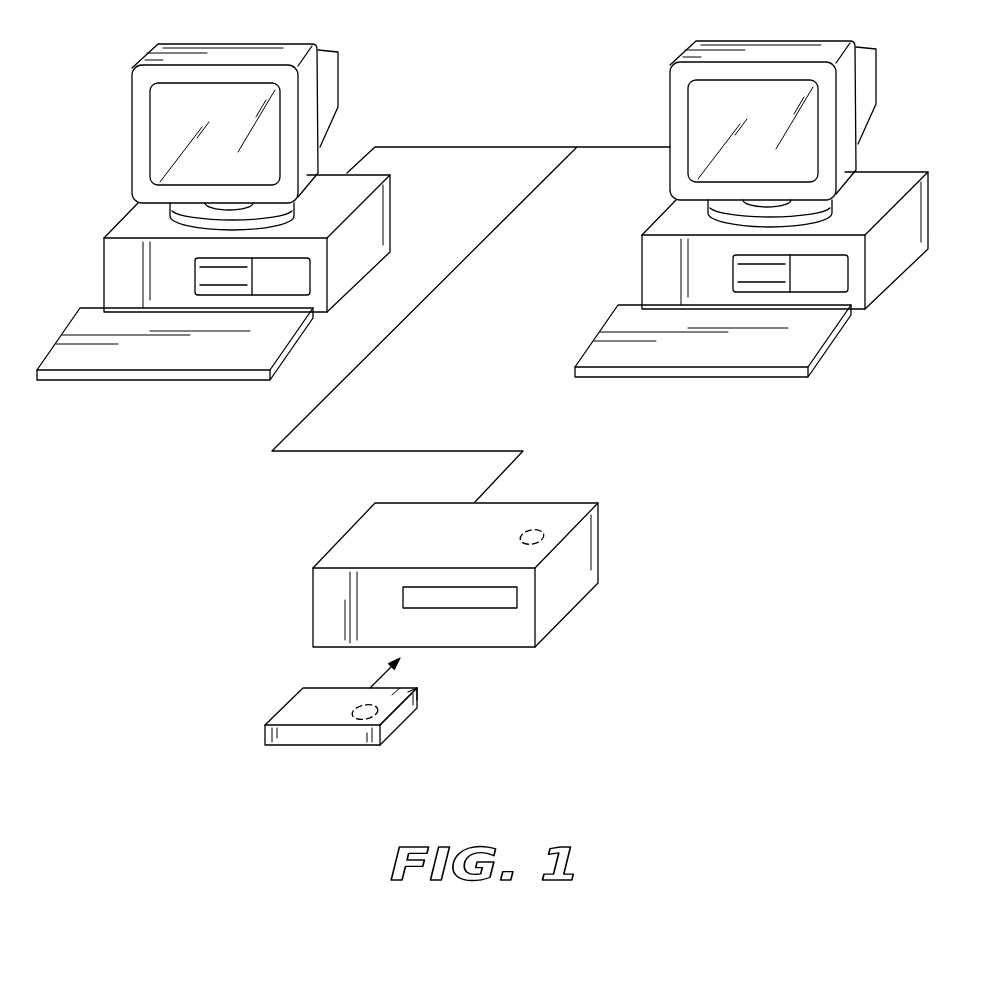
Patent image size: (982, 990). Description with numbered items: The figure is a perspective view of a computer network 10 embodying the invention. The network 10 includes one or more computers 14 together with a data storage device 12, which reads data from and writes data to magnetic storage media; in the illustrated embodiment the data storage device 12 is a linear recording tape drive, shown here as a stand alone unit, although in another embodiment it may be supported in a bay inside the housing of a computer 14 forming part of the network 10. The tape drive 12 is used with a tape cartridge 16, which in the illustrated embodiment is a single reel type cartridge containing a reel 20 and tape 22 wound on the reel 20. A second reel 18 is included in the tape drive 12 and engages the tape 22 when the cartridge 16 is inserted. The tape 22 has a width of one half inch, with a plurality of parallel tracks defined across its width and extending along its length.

The computer network 10 is at (765, 600).
The data storage device 12 is at (362, 540).
The computer 14 is at (135, 223).
The tape cartridge 16 is at (400, 720).
The second reel 18 is at (540, 530).
The reel 20 is at (357, 753).
The tape 22 is at (417, 697).